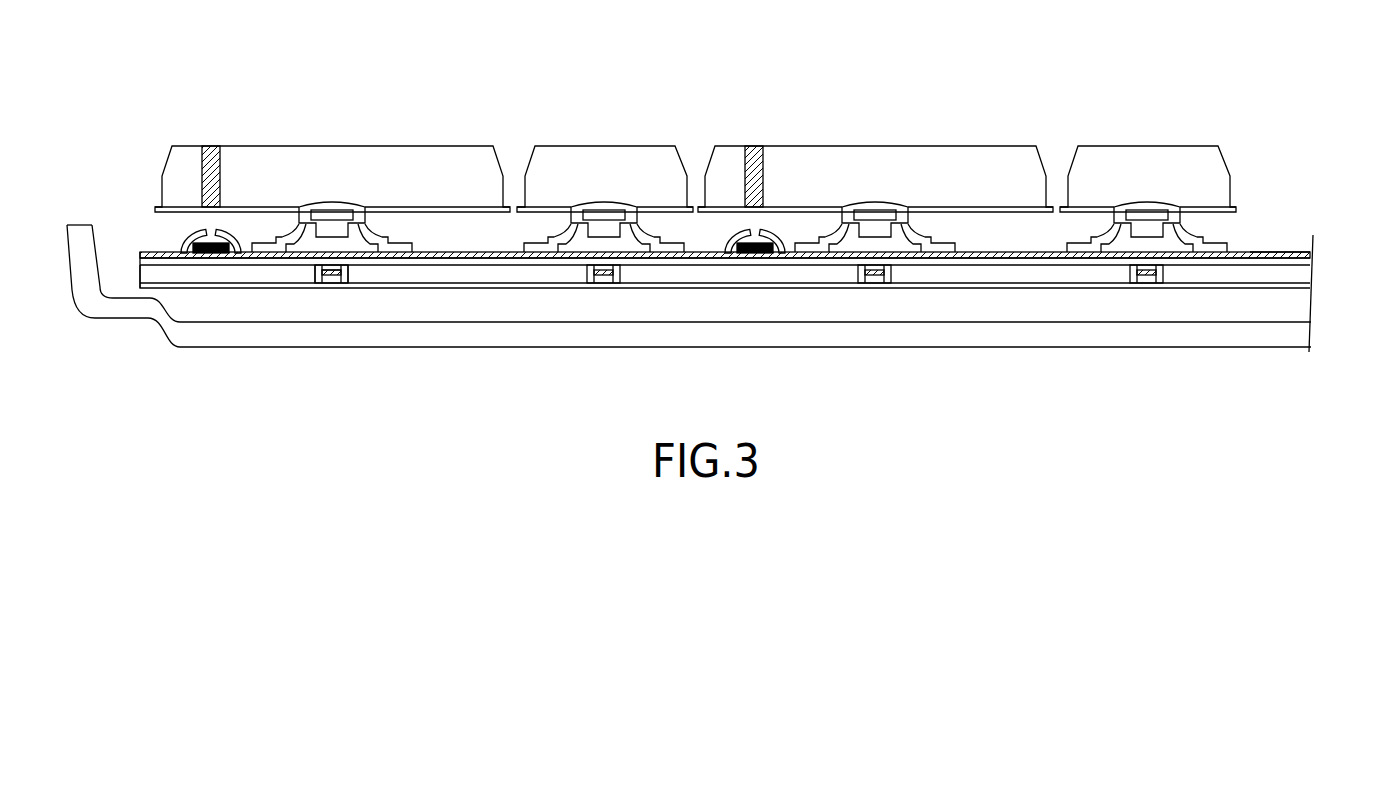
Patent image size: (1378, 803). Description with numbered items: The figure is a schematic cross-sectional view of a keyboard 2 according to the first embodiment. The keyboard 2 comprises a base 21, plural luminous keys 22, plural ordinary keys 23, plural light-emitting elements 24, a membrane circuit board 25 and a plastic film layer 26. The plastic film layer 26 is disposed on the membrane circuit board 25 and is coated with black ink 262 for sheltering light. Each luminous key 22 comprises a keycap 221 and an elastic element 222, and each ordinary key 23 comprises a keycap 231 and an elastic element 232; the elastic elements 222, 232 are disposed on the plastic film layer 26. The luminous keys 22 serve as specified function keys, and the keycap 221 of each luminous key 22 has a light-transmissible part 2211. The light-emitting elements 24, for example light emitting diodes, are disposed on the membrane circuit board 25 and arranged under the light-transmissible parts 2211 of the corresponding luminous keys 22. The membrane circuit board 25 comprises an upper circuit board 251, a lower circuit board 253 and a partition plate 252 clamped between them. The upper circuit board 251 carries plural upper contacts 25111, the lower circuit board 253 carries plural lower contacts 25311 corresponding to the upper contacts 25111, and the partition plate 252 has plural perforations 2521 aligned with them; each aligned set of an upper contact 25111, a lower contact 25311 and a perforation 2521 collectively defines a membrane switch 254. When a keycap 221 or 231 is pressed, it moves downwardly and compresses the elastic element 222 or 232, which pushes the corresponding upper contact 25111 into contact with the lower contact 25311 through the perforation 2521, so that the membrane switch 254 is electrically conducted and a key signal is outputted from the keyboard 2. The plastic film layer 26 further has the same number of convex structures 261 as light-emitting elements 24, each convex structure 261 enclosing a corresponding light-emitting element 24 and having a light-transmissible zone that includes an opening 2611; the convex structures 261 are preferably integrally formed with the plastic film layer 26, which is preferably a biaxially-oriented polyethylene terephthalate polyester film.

The keyboard 2 is at (1184, 43).
The base 21 is at (905, 340).
The luminous key 22 is at (604, 153).
The keycap 221 is at (604, 161).
The light-transmissible part 2211 is at (208, 152).
The elastic element 222 is at (378, 240).
The ordinary key 23 is at (887, 166).
The keycap 231 is at (600, 160).
The elastic element 232 is at (650, 240).
The light-emitting element 24 is at (187, 256).
The membrane circuit board 25 is at (725, 346).
The upper circuit board 251 is at (1190, 286).
The partition plate 252 is at (1192, 272).
The lower circuit board 253 is at (1188, 262).
The membrane switch 254 is at (696, 353).
The perforation 2521 is at (318, 278).
The lower contact 25311 is at (338, 272).
The upper contact 25111 is at (350, 272).
The plastic film layer 26 is at (491, 178).
The convex structure 261 is at (182, 237).
The opening 2611 is at (212, 230).
The black ink 262 is at (1263, 252).